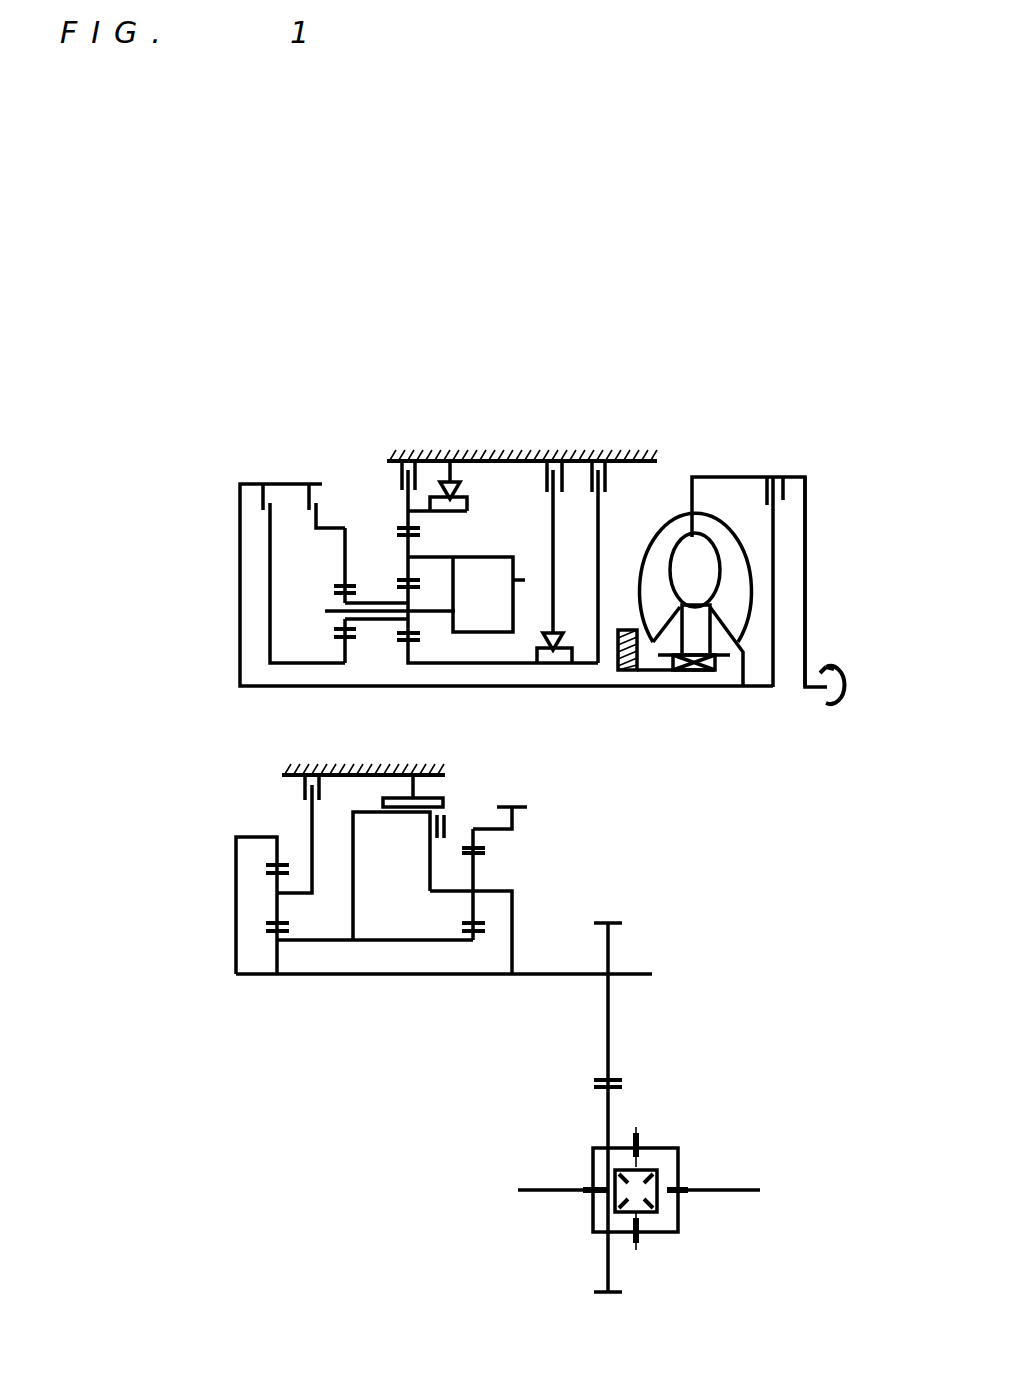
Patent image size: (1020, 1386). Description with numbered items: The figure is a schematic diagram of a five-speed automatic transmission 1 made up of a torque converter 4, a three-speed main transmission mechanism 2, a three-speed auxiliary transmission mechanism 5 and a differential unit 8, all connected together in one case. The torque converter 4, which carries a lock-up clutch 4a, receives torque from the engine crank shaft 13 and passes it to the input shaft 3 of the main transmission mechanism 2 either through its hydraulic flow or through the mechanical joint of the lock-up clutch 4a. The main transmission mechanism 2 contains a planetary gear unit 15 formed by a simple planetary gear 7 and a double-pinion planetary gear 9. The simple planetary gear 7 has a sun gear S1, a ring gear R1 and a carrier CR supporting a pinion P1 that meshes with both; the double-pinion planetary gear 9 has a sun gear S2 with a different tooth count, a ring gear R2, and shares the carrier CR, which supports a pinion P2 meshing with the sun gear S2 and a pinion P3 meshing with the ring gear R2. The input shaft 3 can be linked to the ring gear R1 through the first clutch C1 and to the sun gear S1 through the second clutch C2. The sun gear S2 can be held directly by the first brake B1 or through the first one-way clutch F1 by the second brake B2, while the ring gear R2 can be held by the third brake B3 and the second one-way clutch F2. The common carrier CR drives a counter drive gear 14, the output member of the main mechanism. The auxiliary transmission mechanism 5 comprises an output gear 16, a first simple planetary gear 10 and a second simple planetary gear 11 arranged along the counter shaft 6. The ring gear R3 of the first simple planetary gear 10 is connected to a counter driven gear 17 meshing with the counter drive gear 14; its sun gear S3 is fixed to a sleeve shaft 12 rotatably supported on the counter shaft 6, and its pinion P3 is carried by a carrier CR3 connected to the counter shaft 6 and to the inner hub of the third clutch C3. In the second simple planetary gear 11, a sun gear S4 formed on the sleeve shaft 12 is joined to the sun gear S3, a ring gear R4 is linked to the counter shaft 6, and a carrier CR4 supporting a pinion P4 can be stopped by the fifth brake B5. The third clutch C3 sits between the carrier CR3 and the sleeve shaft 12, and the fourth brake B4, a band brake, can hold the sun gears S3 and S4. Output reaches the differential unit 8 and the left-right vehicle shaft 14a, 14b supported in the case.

The automatic transmission 1 is at (470, 305).
The main transmission mechanism 2 is at (577, 392).
The input shaft 3 is at (618, 687).
The torque converter 4 is at (703, 467).
The lock-up clutch 4a is at (783, 490).
The auxiliary transmission mechanism 5 is at (147, 815).
The counter shaft 6 is at (437, 977).
The simple planetary gear 7 is at (343, 527).
The differential unit 8 is at (705, 1137).
The double-pinion planetary gear 9 is at (393, 507).
The first simple planetary gear 10 is at (513, 847).
The second simple planetary gear 11 is at (213, 888).
The sleeve shaft 12 is at (383, 940).
The crank shaft 13 is at (815, 698).
The counter drive gear 14 is at (525, 580).
The third shaft 14a is at (542, 1193).
The third shaft 14b is at (735, 1193).
The planetary gear unit 15 is at (388, 383).
The output gear 16 is at (612, 950).
The counter driven gear 17 is at (523, 808).
The first brake B1 is at (601, 539).
The second brake B2 is at (552, 453).
The third brake B3 is at (407, 452).
The fourth brake B4 is at (413, 767).
The fifth brake B5 is at (317, 763).
The first clutch C1 is at (320, 489).
The second clutch C2 is at (298, 556).
The third clutch C3 is at (398, 876).
The first one-way clutch F1 is at (565, 566).
The second one-way clutch F2 is at (440, 463).
The ring gear R1 is at (343, 556).
The ring gear R2 is at (421, 527).
The ring gear R3 is at (473, 832).
The ring gear R4 is at (247, 837).
The pinion P1 is at (345, 598).
The pinion P2 is at (412, 620).
The pinion P3 is at (405, 584).
The pinion P4 is at (287, 897).
The sun gear S1 is at (340, 636).
The sun gear S2 is at (418, 634).
The sun gear S3 is at (477, 935).
The sun gear S4 is at (277, 937).
The carrier CR is at (456, 597).
The carrier CR3 is at (512, 915).
The carrier CR4 is at (310, 832).